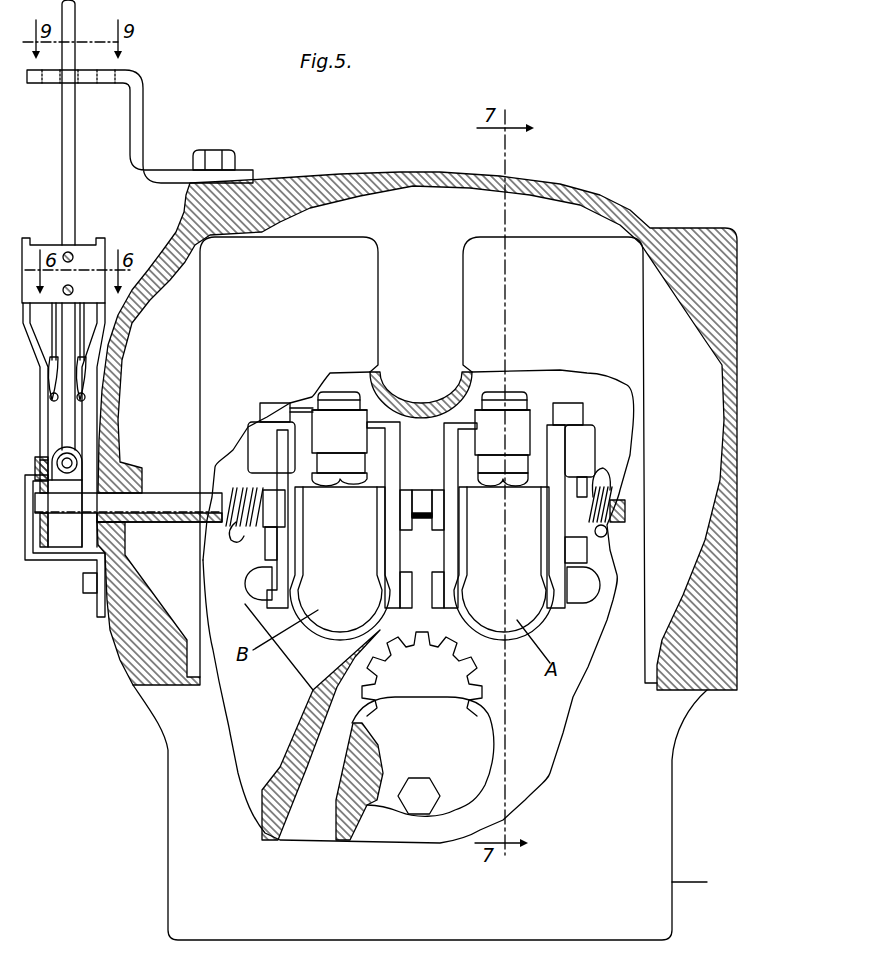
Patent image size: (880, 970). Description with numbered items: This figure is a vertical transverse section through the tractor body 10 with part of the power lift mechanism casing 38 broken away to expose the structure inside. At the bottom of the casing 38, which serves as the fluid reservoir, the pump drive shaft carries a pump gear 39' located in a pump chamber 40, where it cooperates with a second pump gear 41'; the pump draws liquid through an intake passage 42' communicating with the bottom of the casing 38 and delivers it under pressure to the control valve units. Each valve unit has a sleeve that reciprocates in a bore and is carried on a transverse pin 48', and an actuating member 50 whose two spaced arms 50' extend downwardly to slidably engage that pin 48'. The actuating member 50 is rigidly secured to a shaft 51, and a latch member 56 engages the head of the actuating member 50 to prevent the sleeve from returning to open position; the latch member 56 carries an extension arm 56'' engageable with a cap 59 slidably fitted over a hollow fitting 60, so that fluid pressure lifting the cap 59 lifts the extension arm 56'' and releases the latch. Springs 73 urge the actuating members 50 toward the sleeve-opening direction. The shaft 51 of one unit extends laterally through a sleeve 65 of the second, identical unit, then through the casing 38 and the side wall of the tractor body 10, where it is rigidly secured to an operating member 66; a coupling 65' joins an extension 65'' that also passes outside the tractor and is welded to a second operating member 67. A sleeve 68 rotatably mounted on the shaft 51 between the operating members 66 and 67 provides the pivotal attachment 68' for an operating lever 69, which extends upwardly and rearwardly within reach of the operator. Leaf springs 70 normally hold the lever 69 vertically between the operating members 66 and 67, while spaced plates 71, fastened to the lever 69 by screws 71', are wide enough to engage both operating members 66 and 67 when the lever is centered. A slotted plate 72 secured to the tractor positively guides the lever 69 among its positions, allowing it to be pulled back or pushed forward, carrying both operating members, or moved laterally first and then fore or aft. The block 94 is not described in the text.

The tractor body 10 is at (738, 690).
The casing 38 is at (703, 883).
The pump gear 39' is at (422, 692).
The pump chamber 40 is at (438, 742).
The pump gear 41' is at (312, 722).
The intake passage 42' is at (331, 799).
The transverse pin 48' is at (406, 610).
The actuating member 50 is at (442, 478).
The spaced arms 50' is at (541, 549).
The shaft 51 is at (100, 510).
The latch member 56 is at (430, 373).
The extension arm 56'' is at (439, 378).
The cap 59 is at (475, 440).
The hollow fitting 60 is at (477, 460).
The sleeve 65 is at (128, 478).
The coupling 65' is at (159, 538).
The extension 65'' is at (203, 495).
The operating member 66 is at (47, 430).
The operating member 67 is at (87, 438).
The sleeve 68 is at (65, 546).
The pivotal attachment 68' is at (58, 497).
The operating lever 69 is at (70, 118).
The leaf springs 70 is at (53, 372).
The spaced plates 71 is at (78, 254).
The screws 71' is at (51, 249).
The slotted plate 72 is at (140, 120).
The springs 73 is at (240, 528).
The block 94 is at (266, 404).